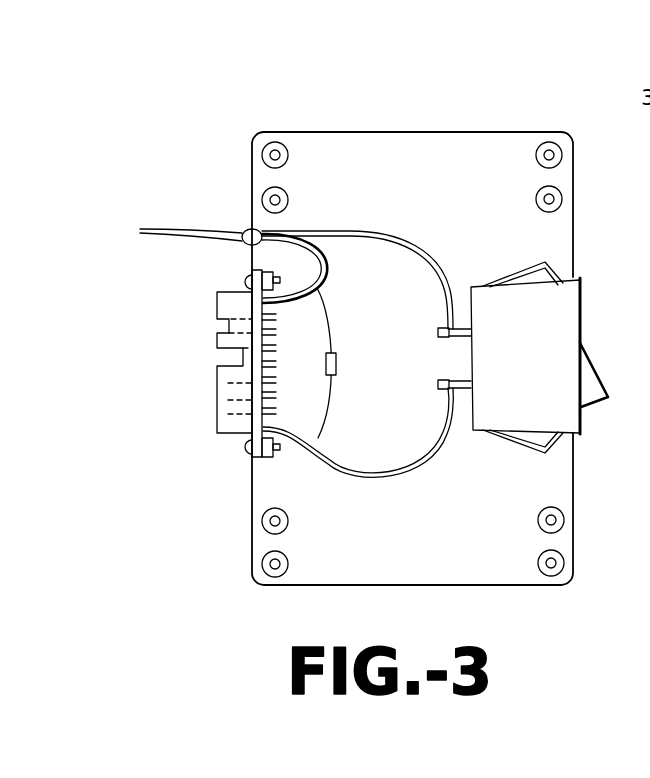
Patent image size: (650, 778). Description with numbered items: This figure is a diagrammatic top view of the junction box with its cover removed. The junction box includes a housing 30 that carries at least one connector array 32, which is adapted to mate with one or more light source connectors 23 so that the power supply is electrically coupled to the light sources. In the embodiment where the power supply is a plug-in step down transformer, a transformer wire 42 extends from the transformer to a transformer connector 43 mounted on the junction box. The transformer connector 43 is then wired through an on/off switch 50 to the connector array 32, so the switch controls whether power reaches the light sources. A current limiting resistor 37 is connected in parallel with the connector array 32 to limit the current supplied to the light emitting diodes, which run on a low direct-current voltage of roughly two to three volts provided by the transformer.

The housing 30 is at (503, 167).
The connector array 32 is at (235, 427).
The light source connector 23 is at (245, 355).
The transformer wire 42 is at (182, 228).
The transformer connector 43 is at (245, 230).
The current limiting resistor 37 is at (336, 366).
The on/off switch 50 is at (522, 372).